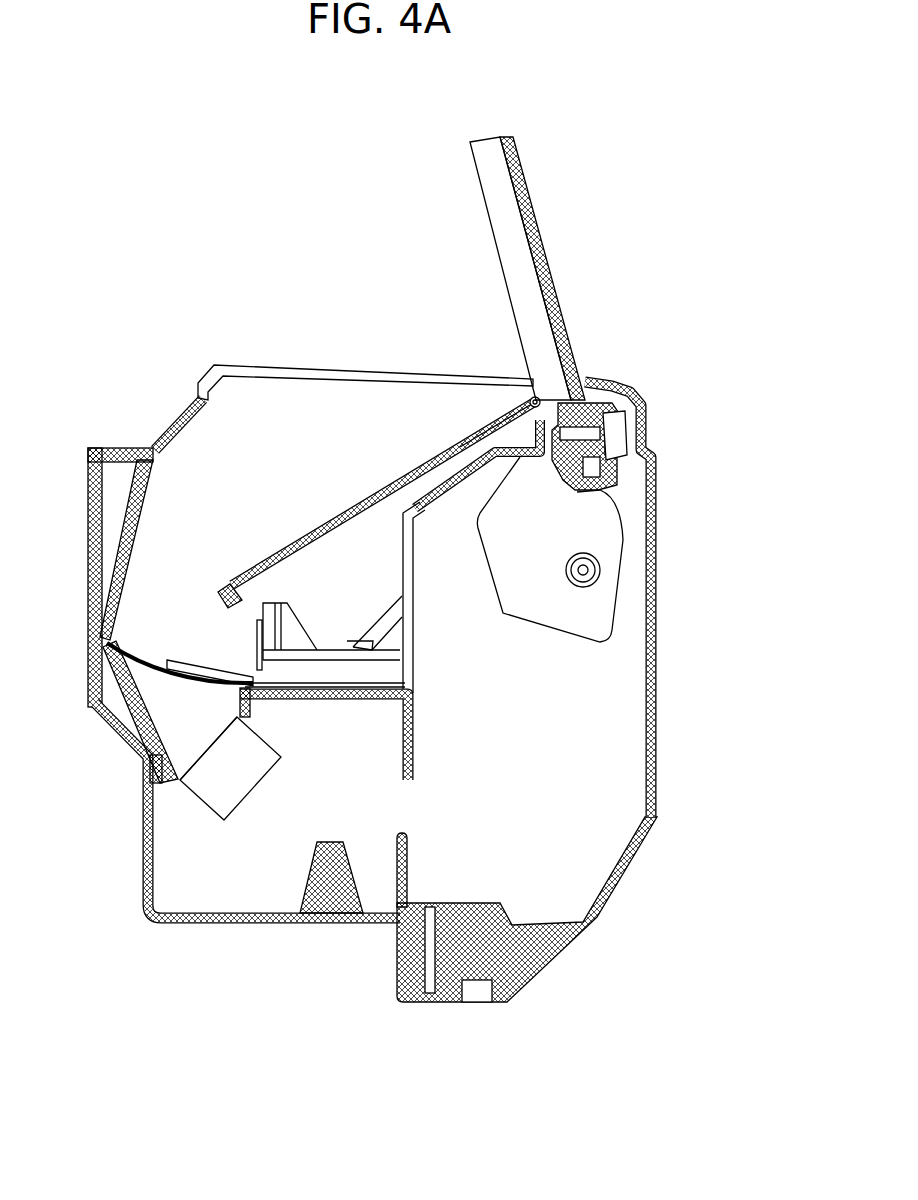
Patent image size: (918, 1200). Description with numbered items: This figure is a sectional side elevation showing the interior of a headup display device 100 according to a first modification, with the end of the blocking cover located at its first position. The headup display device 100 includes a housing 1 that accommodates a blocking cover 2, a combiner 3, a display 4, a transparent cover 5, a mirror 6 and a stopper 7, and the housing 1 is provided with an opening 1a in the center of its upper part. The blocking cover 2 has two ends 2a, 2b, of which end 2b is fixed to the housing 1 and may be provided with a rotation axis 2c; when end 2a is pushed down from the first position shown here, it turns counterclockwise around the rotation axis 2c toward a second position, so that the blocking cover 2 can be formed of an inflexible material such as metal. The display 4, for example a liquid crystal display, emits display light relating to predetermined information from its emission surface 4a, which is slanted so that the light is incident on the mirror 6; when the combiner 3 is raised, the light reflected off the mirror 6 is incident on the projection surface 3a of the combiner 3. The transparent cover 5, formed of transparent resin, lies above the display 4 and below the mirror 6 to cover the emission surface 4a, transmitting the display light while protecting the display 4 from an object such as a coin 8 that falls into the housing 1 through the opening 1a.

The headup display device 100 is at (281, 239).
The housing 1 is at (657, 735).
The opening 1a is at (283, 370).
The blocking cover 2 is at (357, 500).
The end of blocking cover 2a is at (235, 575).
The end of blocking cover 2b is at (488, 427).
The rotation axis 2c is at (530, 393).
The combiner 3 is at (538, 210).
The projection surface 3a is at (523, 210).
The display 4 is at (262, 738).
The emission surface 4a is at (213, 752).
The transparent cover 5 is at (130, 693).
The mirror 6 is at (120, 532).
The stopper 7 is at (265, 602).
The coin 8 is at (238, 667).